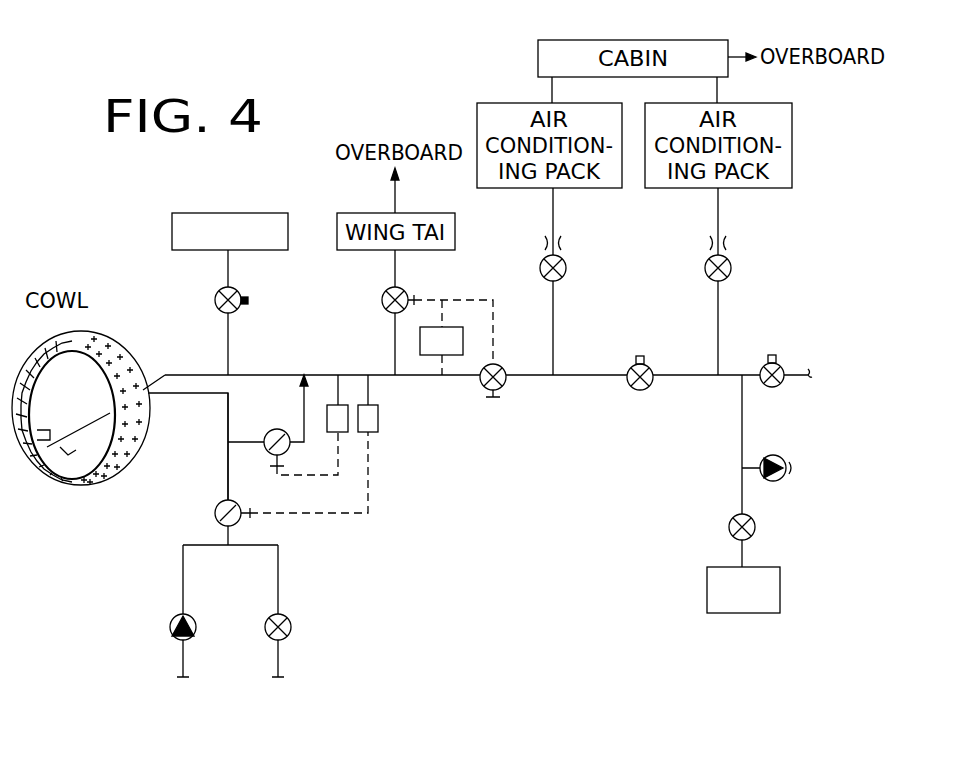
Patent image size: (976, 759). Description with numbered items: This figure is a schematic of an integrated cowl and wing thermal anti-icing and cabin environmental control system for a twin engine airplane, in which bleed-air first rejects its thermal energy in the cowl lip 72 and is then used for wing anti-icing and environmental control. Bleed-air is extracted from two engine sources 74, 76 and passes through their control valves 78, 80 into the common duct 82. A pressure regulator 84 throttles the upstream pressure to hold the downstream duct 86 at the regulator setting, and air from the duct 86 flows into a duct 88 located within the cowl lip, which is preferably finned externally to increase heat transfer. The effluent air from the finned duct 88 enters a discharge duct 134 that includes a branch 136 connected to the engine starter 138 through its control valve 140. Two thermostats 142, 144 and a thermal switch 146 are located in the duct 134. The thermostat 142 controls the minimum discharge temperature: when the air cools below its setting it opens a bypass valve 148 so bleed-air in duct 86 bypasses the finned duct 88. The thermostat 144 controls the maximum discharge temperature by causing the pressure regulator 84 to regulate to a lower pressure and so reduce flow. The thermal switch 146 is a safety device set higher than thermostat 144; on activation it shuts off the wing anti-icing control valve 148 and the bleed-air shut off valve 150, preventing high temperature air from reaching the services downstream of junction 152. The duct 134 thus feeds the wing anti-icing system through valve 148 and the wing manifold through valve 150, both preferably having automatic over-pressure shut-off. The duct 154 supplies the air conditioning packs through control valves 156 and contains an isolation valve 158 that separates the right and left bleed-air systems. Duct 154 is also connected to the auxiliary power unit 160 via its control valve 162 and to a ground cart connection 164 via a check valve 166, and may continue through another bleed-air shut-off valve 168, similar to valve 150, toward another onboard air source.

The cowl lip 72 is at (37, 452).
The bleed-air source 74 is at (280, 656).
The bleed-air source 76 is at (183, 654).
The control valve 78 is at (293, 627).
The control valve 80 is at (168, 623).
The common duct 82 is at (228, 530).
The pressure regulator 84 is at (222, 500).
The downstream duct 86 is at (228, 460).
The finned duct 88 is at (70, 480).
The discharge duct 134 is at (178, 372).
The branch 136 is at (228, 345).
The engine starter 138 is at (220, 213).
The control valve 140 is at (215, 304).
The thermostat 142 is at (309, 472).
The thermostat 144 is at (377, 432).
The thermal switch 146 is at (460, 327).
The bypass valve 148 is at (382, 303).
The bleed-air shut off valve 150 is at (493, 400).
The junction 152 is at (393, 380).
The duct 154 is at (537, 379).
The control valve 156 is at (563, 262).
The isolation valve 158 is at (640, 390).
The auxiliary power unit 160 is at (707, 588).
The control valve 162 is at (729, 528).
The ground cart connection 164 is at (843, 488).
The check valve 166 is at (772, 460).
The bleed-air shut-off valve 168 is at (780, 362).